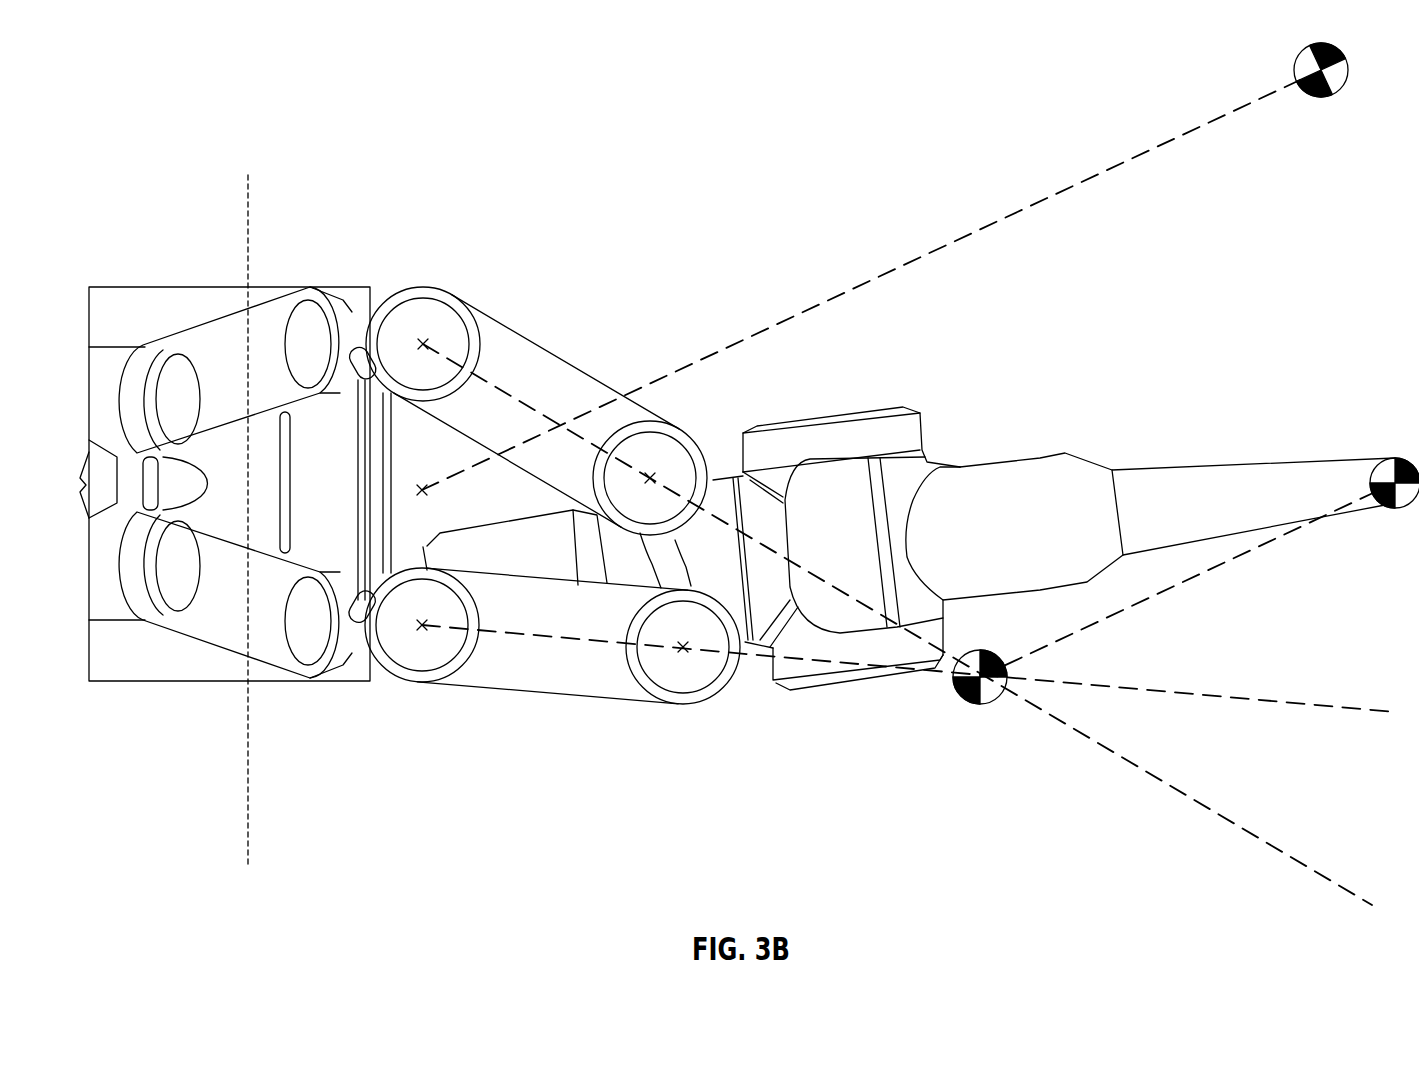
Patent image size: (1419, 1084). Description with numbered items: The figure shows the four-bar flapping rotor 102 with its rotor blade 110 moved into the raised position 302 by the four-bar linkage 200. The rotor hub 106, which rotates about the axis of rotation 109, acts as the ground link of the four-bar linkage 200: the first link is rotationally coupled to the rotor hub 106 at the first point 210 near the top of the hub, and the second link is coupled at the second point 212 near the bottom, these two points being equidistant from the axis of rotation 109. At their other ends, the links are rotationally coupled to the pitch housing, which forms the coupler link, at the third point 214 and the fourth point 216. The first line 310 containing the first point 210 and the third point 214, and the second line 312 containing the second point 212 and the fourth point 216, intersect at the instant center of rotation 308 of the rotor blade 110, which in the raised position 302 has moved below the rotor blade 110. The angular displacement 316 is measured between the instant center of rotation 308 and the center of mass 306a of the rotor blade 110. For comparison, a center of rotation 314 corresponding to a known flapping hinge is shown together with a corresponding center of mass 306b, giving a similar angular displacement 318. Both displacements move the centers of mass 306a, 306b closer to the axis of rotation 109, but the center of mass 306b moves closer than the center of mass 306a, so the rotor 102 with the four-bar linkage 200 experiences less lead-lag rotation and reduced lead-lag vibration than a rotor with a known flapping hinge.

The four-bar flapping rotor 102 is at (394, 183).
The axis of rotation 109 is at (248, 206).
The rotor hub 106 is at (303, 288).
The four-bar linkage 200 is at (551, 313).
The first point 210 is at (425, 342).
The second point 212 is at (424, 630).
The third point 214 is at (652, 476).
The fourth point 216 is at (685, 650).
The first line 310 is at (518, 397).
The second line 312 is at (545, 648).
The center of rotation 314 is at (422, 488).
The angular displacement 316 is at (1205, 572).
The angular displacement 318 is at (906, 263).
The raised position 302 is at (1044, 358).
The rotor blade 110 is at (1205, 465).
The center of mass 306a is at (1394, 458).
The center of mass 306b is at (1323, 97).
The instant center of rotation 308 is at (980, 704).